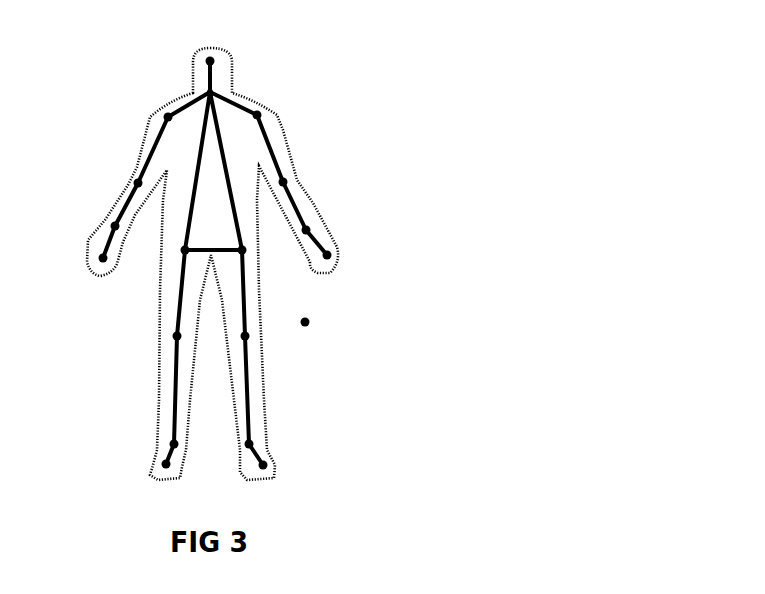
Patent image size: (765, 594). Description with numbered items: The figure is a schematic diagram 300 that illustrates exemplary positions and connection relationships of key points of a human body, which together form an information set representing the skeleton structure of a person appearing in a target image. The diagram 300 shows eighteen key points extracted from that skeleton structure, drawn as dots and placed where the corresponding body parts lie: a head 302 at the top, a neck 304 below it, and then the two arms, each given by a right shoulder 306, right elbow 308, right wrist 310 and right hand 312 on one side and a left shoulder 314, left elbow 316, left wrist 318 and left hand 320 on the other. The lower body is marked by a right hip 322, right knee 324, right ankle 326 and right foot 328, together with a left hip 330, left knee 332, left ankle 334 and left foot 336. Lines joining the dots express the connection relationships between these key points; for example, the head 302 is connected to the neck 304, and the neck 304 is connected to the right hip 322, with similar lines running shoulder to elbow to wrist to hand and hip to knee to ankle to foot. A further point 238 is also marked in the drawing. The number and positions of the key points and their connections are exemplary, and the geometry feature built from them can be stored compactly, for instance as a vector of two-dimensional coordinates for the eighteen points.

The schematic diagram 300 is at (353, 48).
The head 302 is at (211, 58).
The neck 304 is at (212, 89).
The right shoulder 306 is at (166, 113).
The right elbow 308 is at (137, 181).
The right wrist 310 is at (113, 224).
The right hand 312 is at (102, 256).
The left shoulder 314 is at (313, 108).
The left elbow 316 is at (285, 180).
The left wrist 318 is at (307, 228).
The left hand 320 is at (328, 253).
The right hip 322 is at (183, 249).
The right knee 324 is at (176, 335).
The right ankle 326 is at (174, 443).
The right foot 328 is at (166, 463).
The left hip 330 is at (291, 246).
The left knee 332 is at (290, 336).
The left ankle 334 is at (290, 446).
The left foot 336 is at (305, 464).
The depth camera point / sensor position 238 is at (307, 318).